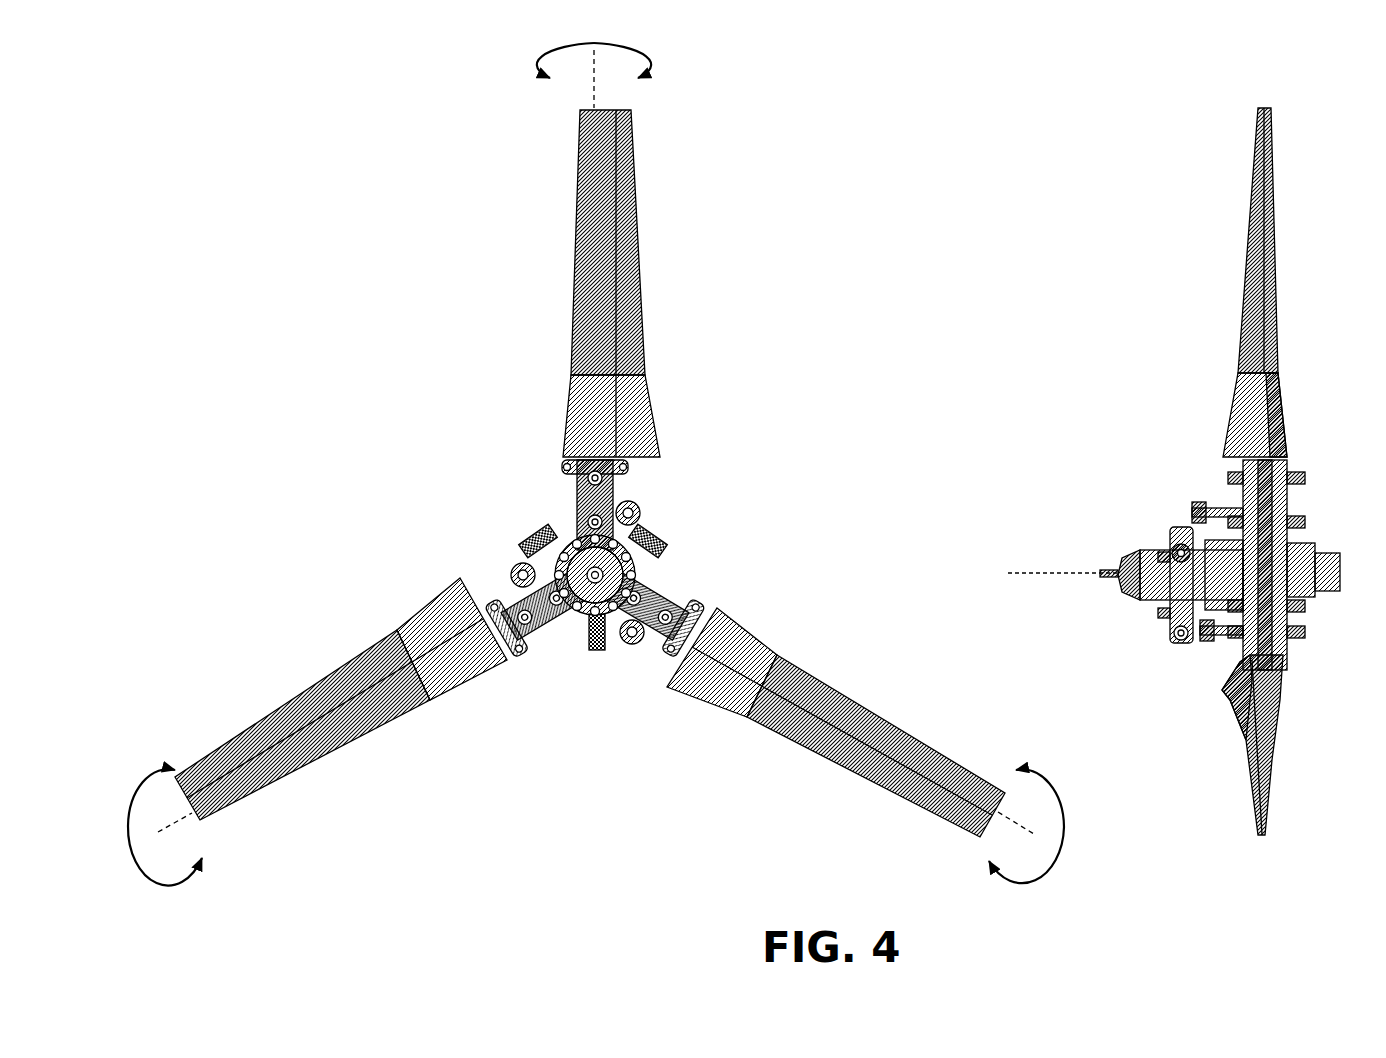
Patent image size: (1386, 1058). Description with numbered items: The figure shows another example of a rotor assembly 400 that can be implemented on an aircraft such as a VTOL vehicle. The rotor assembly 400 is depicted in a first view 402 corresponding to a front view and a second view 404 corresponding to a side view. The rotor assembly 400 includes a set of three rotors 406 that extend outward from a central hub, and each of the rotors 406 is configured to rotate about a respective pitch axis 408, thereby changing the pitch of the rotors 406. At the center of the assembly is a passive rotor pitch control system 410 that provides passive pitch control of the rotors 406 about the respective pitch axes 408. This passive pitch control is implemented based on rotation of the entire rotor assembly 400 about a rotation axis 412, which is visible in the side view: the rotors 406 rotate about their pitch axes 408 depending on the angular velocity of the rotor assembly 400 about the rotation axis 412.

The rotor assembly 400 is at (225, 83).
The first view 402 is at (369, 295).
The second view 404 is at (1103, 298).
The rotors 406 is at (581, 218).
The pitch axes 408 is at (594, 82).
The passive rotor pitch control system 410 is at (527, 512).
The rotation axis 412 is at (1050, 573).